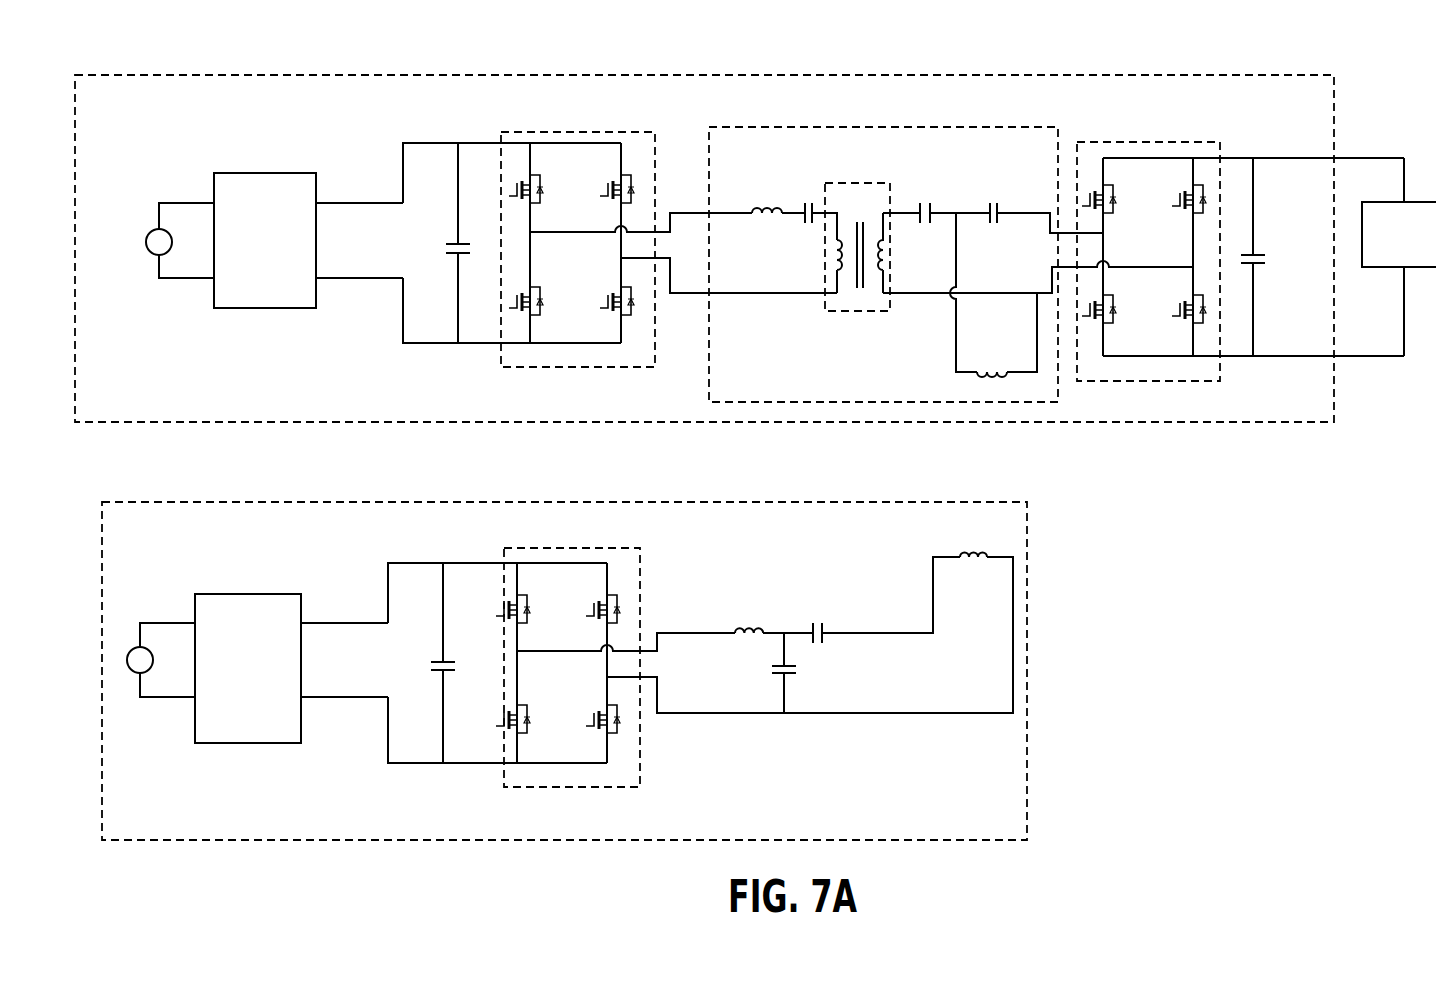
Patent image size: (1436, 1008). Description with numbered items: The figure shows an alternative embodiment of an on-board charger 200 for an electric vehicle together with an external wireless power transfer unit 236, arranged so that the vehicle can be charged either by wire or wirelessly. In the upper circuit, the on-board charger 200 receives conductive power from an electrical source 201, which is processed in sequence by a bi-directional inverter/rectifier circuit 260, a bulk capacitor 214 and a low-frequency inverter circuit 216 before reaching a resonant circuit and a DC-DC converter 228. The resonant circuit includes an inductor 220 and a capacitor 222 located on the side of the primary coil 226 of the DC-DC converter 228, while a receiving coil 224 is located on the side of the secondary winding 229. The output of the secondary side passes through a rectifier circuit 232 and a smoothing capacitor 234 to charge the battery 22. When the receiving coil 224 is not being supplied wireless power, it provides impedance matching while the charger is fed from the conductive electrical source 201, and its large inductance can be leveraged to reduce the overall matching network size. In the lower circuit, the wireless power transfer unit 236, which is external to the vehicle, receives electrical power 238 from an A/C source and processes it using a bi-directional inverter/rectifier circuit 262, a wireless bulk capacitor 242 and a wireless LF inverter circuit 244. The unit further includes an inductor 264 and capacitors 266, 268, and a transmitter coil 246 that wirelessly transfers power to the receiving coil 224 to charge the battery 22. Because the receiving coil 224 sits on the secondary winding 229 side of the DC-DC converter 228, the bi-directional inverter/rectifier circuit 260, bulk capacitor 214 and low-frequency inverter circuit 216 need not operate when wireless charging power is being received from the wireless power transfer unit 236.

The on-board charger 200 is at (710, 75).
The electrical source 201 is at (152, 230).
The bi-directional inverter/rectifier circuit 260 is at (273, 173).
The bulk capacitor 214 is at (444, 240).
The low-frequency (LF) inverter circuit 216 is at (571, 132).
The inductor 220 is at (752, 220).
The capacitor 222 is at (805, 224).
The DC-DC converter 228 is at (883, 213).
The primary coil 226 is at (838, 270).
The secondary winding 229 is at (887, 253).
The inductor 264 is at (927, 203).
The bi-directional inverter/rectifier circuit 262 is at (995, 203).
The receiving coil 224 is at (982, 370).
The rectifier circuit 232 is at (1138, 142).
The smoothing capacitor 234 is at (1257, 250).
The battery 22 is at (1418, 251).
The wireless power transfer unit 236 is at (512, 502).
The electrical power 238 is at (134, 648).
The wireless bulk capacitor 242 is at (432, 658).
The wireless LF inverter circuit 244 is at (570, 548).
The capacitor 268 is at (823, 625).
The capacitor 266 is at (774, 673).
The transmitter coil 246 is at (980, 545).